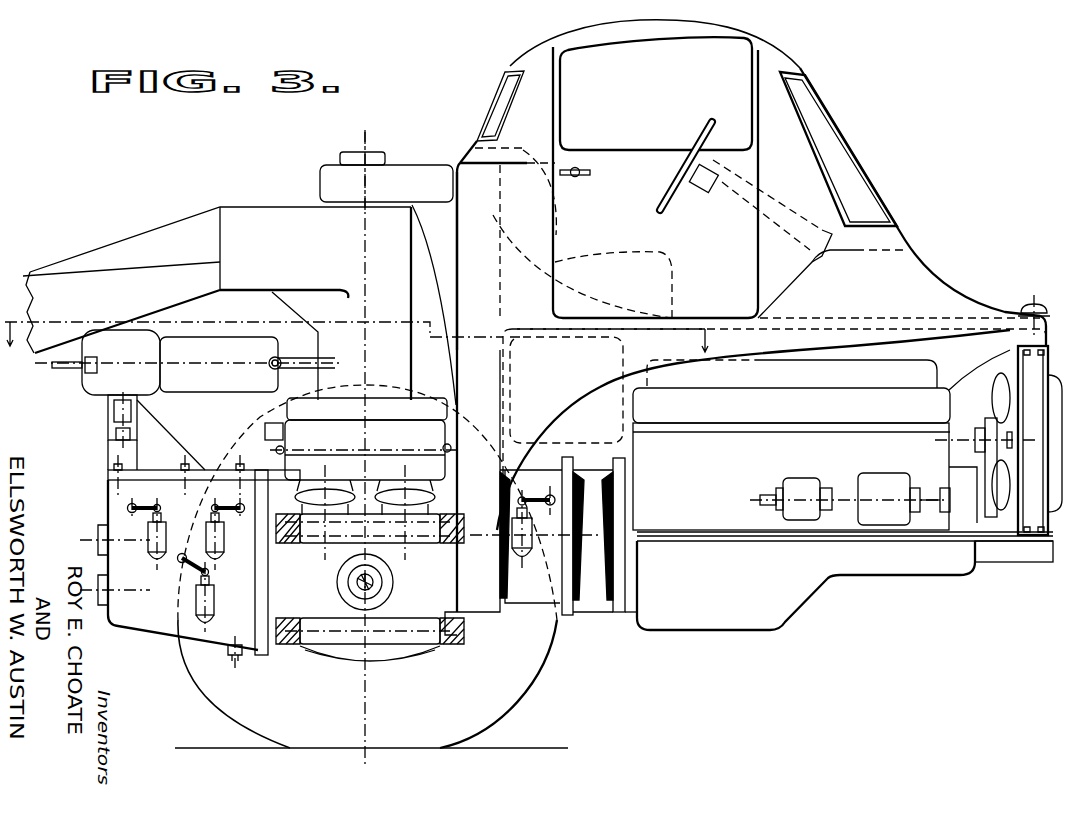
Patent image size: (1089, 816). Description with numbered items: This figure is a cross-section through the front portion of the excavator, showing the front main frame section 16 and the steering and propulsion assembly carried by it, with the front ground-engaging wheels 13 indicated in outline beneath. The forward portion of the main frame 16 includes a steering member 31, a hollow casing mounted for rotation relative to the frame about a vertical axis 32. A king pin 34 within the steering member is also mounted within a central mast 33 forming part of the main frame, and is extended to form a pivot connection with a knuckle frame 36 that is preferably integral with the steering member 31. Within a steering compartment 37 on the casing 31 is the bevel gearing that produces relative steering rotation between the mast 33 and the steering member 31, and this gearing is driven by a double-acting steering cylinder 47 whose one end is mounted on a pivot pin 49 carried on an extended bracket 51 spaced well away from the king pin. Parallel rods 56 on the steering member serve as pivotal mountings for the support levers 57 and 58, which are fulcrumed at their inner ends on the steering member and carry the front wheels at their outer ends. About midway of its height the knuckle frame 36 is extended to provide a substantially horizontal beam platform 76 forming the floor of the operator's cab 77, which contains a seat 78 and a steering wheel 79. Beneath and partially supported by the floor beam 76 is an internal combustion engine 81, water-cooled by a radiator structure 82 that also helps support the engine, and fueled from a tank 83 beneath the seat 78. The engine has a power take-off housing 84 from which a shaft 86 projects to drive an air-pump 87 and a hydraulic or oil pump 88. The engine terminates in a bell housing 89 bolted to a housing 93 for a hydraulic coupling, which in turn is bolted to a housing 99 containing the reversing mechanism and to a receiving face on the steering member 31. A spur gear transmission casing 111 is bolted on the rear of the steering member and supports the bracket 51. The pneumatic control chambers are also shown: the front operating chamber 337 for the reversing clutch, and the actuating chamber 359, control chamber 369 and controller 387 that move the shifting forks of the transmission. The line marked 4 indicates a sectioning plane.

The section line 4- 4 is at (363, 325).
The front ground-engaging wheels 13 is at (546, 682).
The front main frame section 16 is at (118, 243).
The steering member 31 is at (494, 616).
The vertical axis 32 is at (366, 152).
The central mast 33 is at (400, 372).
The king pin 34 is at (341, 158).
The knuckle frame 36 is at (431, 172).
The steering compartment 37 is at (300, 415).
The double-acting steering cylinder 47 is at (190, 386).
The pivot pin 49 is at (115, 416).
The extended bracket 51 is at (183, 469).
The parallel rods 56 is at (318, 548).
The support lever 57 is at (294, 547).
The support lever 58 is at (293, 646).
The horizontal beam platform 76 is at (871, 323).
The operator's cab 77 is at (793, 64).
The seat 78 is at (630, 257).
The steering wheel 79 is at (684, 177).
The internal combustion engine 81 is at (873, 571).
The radiator structure 82 is at (1044, 377).
The fuel tank 83 is at (615, 407).
The power take-off housing 84 is at (950, 479).
The shaft 86 is at (933, 507).
The air-pump 87 is at (877, 484).
The hydraulic or oil pump 88 is at (795, 483).
The bell housing 89 is at (633, 584).
The hydraulic coupling housing 93 is at (603, 600).
The reversing mechanism housing 99 is at (546, 600).
The transmission casing 111 is at (157, 632).
The front operating chamber 337 is at (527, 532).
The actuating chamber 359 is at (152, 546).
The control chamber 369 is at (198, 601).
The controller 387 is at (226, 549).